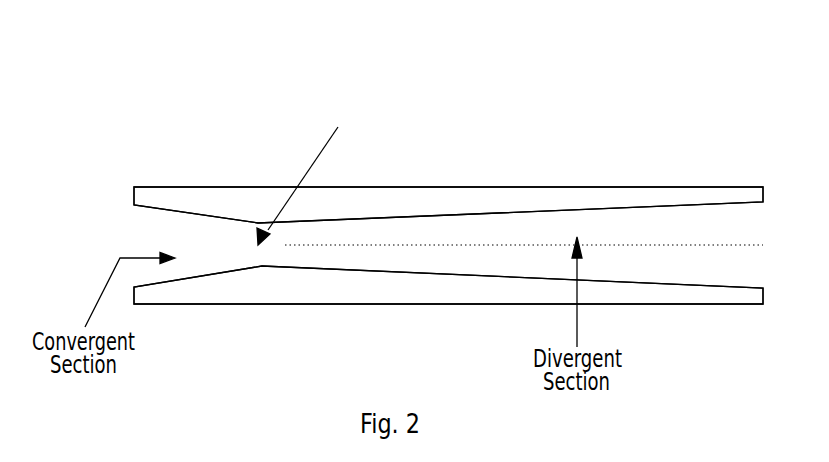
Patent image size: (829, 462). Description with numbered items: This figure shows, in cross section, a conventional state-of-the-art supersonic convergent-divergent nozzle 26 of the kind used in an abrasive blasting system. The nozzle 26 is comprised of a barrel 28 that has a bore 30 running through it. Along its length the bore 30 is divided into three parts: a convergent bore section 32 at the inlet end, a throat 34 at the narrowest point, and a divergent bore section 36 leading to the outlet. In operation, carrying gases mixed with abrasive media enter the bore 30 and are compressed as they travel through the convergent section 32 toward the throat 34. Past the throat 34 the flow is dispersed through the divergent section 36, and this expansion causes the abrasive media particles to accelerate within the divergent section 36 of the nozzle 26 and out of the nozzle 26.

The convergent-divergent nozzle 26 is at (448, 167).
The barrel 28 is at (162, 182).
The bore 30 is at (120, 278).
The convergent bore section 32 is at (448, 268).
The throat 34 is at (328, 189).
The divergent bore section 36 is at (524, 290).